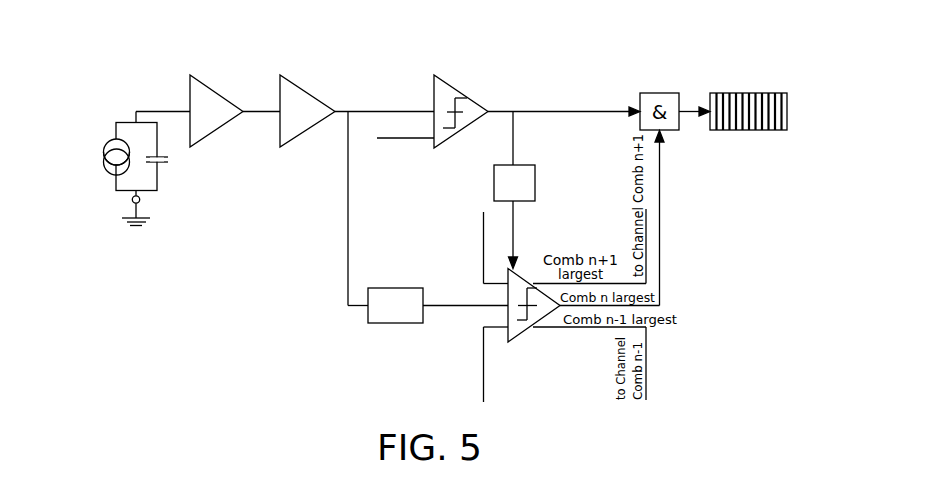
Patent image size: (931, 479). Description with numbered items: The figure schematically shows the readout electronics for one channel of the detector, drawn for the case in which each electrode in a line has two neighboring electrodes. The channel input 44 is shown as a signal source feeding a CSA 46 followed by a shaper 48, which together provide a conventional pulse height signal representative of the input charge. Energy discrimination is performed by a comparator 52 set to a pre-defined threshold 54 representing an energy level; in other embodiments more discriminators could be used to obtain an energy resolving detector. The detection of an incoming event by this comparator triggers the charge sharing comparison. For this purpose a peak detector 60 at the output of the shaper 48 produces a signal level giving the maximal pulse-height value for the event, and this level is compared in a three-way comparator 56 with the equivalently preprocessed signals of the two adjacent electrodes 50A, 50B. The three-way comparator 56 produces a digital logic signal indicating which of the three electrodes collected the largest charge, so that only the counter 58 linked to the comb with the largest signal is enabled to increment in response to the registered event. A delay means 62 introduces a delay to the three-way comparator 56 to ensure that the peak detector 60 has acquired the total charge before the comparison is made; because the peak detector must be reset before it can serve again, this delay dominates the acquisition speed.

The signal source circuit 44 is at (127, 124).
The CSA 46 is at (203, 142).
The shaper 48 is at (295, 140).
The comparator 52 is at (478, 102).
The pre-defined threshold 54 is at (393, 138).
The 3-way comparator 56 is at (517, 334).
The counter 58 is at (747, 93).
The peak detector 60 is at (380, 323).
The delay means 62 is at (536, 185).
The adjacent electrode 50A is at (484, 250).
The adjacent electrode 50B is at (482, 377).